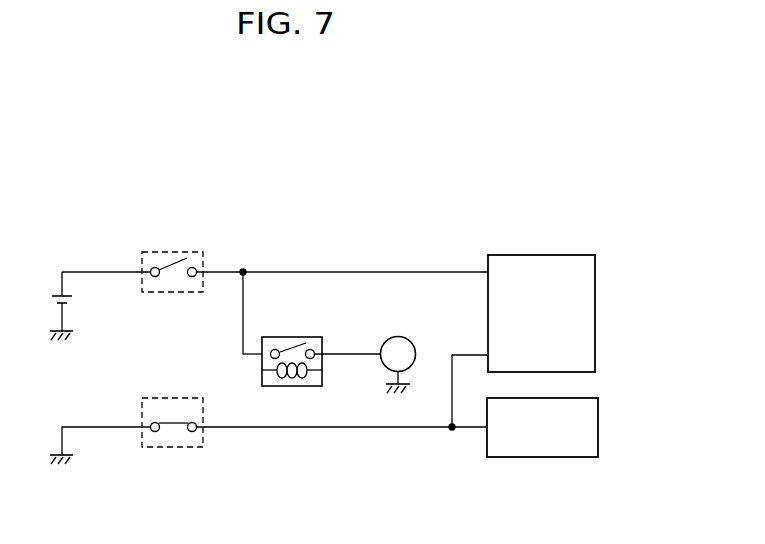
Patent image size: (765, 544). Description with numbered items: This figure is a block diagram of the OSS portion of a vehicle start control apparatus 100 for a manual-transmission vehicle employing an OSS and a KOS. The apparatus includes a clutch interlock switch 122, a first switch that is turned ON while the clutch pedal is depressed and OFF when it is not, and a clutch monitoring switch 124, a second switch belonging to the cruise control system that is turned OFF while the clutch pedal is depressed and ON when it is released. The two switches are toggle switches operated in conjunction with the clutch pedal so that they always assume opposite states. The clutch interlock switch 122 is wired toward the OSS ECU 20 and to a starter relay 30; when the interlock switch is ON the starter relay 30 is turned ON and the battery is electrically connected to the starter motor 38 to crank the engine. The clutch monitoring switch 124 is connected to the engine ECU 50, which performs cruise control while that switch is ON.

The vehicle start control apparatus 100 is at (81, 185).
The clutch interlock switch 122 is at (173, 251).
The clutch monitoring switch 124 is at (173, 397).
The starter relay 30 is at (292, 336).
The starter motor 38 is at (398, 337).
The OSS ECU 20 is at (595, 312).
The engine ECU 50 is at (598, 427).